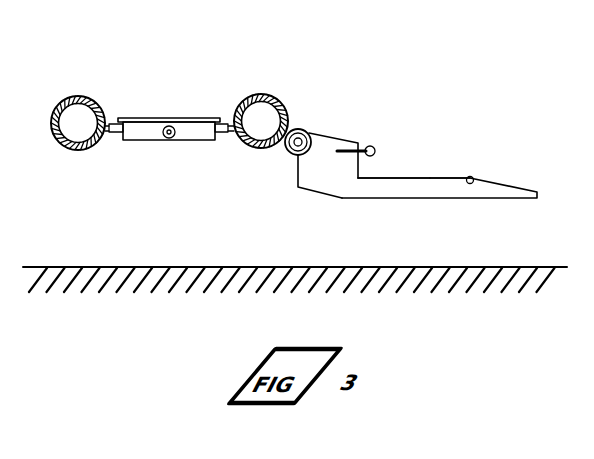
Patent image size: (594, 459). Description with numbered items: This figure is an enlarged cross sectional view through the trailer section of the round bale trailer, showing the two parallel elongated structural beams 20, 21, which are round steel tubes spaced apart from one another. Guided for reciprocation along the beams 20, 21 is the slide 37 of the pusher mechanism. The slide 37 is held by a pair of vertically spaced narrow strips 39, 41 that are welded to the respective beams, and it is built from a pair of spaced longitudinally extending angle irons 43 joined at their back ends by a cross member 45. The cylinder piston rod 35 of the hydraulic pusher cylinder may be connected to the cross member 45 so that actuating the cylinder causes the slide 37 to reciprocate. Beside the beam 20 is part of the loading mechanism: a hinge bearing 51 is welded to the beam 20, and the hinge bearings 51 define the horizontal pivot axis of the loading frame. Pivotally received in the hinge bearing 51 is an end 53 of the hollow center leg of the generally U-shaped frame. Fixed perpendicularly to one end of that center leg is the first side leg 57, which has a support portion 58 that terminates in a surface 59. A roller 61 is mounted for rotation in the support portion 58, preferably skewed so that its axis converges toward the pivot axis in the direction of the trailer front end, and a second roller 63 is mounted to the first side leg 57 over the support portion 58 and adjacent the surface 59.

The structural beam 20 is at (272, 95).
The structural beam 21 is at (84, 97).
The cylinder piston rod 35 is at (166, 139).
The slide 37 is at (161, 131).
The narrow strip 39 is at (113, 118).
The narrow strip 41 is at (112, 131).
The angle iron 43 is at (110, 131).
The cross member 45 is at (137, 132).
The hinge bearing 51 is at (297, 156).
The end of hollow center leg 53 is at (305, 133).
The first side leg 57 is at (428, 168).
The support portion 58 is at (439, 180).
The surface 59 is at (360, 168).
The roller 61 is at (472, 178).
The second roller 63 is at (370, 146).